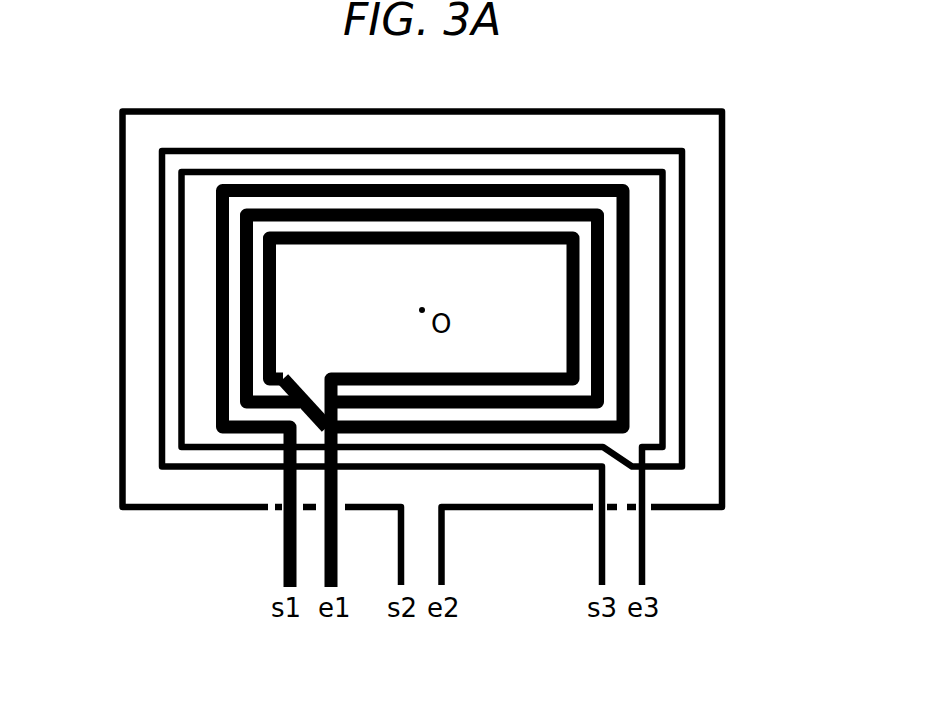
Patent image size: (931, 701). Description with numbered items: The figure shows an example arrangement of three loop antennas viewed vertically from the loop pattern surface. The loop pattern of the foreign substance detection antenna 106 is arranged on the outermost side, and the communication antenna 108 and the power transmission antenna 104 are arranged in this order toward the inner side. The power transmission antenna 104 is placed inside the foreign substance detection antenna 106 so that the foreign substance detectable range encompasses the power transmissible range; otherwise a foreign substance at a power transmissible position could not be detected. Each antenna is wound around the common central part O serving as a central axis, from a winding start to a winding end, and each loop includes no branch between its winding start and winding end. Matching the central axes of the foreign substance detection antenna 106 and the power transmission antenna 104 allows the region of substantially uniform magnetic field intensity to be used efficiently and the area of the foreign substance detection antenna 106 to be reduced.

The power transmission antenna 104 is at (629, 335).
The foreign substance detection antenna 106 is at (725, 133).
The communication antenna 108 is at (685, 222).